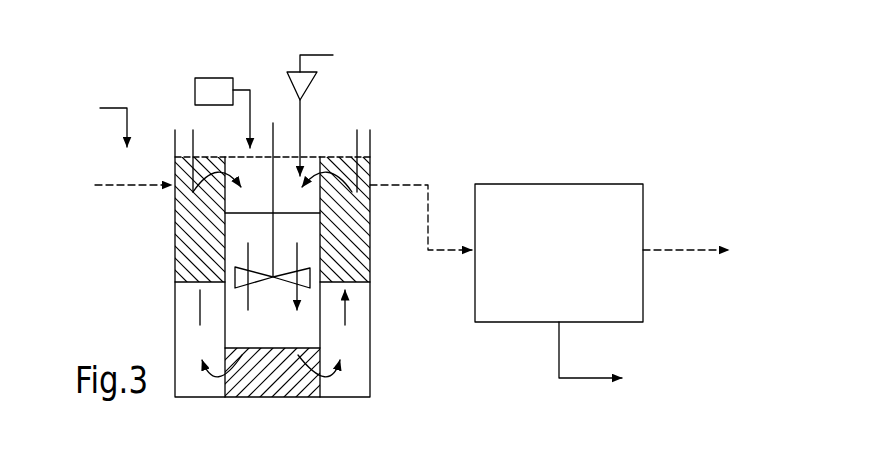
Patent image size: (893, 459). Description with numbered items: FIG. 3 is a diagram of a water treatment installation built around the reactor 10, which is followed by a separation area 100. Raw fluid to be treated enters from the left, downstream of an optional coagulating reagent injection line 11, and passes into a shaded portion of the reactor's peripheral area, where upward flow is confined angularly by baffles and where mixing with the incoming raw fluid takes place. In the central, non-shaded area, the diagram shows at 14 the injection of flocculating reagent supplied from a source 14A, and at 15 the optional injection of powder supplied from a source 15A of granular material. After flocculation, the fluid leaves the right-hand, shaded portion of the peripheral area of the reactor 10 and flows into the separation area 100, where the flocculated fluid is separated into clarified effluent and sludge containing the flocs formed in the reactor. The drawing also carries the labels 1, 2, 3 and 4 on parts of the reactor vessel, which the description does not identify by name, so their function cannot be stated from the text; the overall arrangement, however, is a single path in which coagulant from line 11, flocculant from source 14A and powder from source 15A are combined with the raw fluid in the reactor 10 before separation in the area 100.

The first inlet 1 is at (184, 146).
The reaction chamber 2 is at (278, 336).
The return channels 3 is at (196, 388).
The second inlet 4 is at (364, 146).
The reactor 10 is at (380, 349).
The coagulating reagent injection line 11 is at (115, 108).
The injection of flocculating reagent 14 is at (251, 110).
The source of flocculating reagent 14A is at (210, 78).
The injection of powder 15 is at (305, 122).
The source of granular material 15A is at (316, 86).
The separation area 100 is at (581, 265).